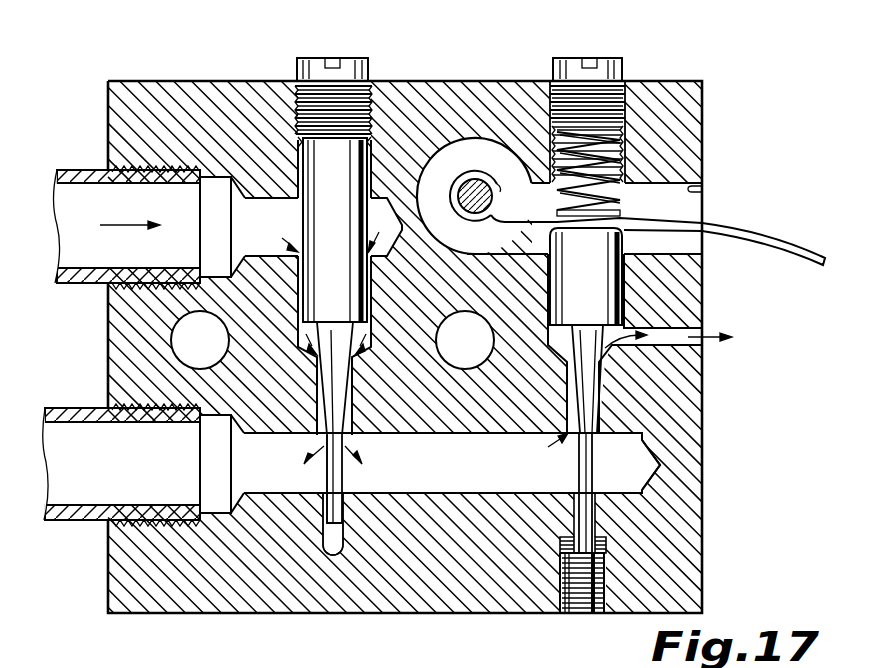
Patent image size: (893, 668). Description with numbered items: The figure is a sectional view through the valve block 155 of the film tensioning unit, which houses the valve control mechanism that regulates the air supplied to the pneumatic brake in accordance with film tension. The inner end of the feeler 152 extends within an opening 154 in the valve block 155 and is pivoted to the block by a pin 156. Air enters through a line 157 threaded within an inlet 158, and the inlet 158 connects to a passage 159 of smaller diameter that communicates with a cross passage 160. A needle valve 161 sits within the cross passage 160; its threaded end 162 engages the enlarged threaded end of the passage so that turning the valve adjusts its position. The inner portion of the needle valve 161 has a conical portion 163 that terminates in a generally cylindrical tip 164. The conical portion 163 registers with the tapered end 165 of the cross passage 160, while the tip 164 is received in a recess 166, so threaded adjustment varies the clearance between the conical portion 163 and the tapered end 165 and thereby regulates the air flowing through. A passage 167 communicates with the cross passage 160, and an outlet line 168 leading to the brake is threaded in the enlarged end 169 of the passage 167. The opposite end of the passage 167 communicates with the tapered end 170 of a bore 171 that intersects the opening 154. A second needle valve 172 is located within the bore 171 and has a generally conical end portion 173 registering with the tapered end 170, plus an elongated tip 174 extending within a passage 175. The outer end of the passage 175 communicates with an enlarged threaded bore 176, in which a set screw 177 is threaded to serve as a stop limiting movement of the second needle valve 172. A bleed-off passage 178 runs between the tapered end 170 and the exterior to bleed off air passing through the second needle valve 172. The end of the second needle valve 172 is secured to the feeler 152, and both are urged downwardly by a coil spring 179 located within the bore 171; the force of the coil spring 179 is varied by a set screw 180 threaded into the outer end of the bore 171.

The feeler 152 is at (788, 240).
The opening 154 is at (705, 190).
The valve block 155 is at (693, 123).
The pin 156 is at (488, 160).
The line 157 is at (77, 168).
The inlet 158 is at (203, 190).
The passage 159 is at (272, 200).
The cross passage 160 is at (290, 290).
The needle valve 161 is at (341, 249).
The end 162 is at (370, 75).
The conical portion 163 is at (333, 377).
The cylindrical tip 164 is at (335, 495).
The tapered end 165 is at (360, 420).
The recess 166 is at (332, 552).
The passage 167 is at (442, 484).
The outlet line 168 is at (75, 406).
The enlarged end 169 is at (202, 420).
The tapered end 170 is at (600, 401).
The bore 171 is at (552, 332).
The second needle valve 172 is at (595, 273).
The conical end portion 173 is at (583, 381).
The elongated tip 174 is at (590, 467).
The passage 175 is at (580, 485).
The threaded bore 176 is at (600, 550).
The set screw 177 is at (578, 600).
The bleed-off passage 178 is at (675, 334).
The coil spring 179 is at (626, 199).
The set screw 180 is at (620, 60).